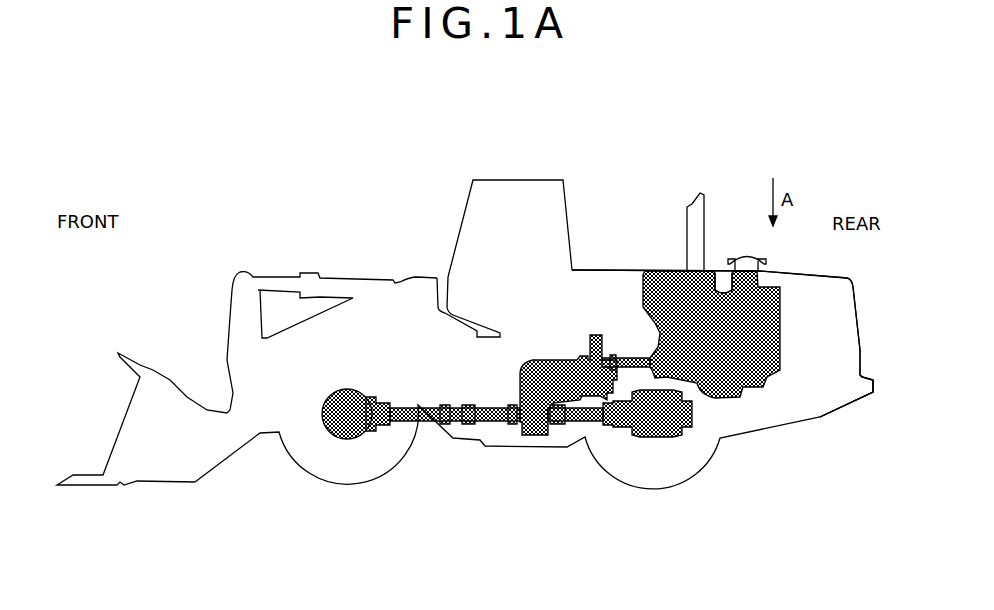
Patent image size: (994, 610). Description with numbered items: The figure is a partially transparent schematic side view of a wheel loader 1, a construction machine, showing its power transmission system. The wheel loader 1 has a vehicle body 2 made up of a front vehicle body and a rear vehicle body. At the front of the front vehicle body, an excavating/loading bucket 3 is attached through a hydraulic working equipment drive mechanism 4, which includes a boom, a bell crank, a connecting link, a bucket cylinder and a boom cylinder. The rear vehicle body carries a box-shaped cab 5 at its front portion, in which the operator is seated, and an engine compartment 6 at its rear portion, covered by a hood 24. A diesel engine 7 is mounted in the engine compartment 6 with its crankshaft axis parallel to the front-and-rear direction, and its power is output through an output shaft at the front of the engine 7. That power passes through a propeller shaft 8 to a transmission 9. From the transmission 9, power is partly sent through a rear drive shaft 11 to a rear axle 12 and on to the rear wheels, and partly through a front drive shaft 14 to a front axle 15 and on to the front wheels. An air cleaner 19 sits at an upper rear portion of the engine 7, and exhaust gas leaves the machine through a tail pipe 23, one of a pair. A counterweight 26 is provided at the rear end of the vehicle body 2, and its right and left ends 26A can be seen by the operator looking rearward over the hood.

The wheel loader 1 is at (427, 131).
The vehicle body 2 is at (613, 271).
The excavating/loading bucket 3 is at (160, 374).
The hydraulic working equipment drive mechanism 4 is at (257, 255).
The cab 5 is at (530, 182).
The engine compartment 6 is at (806, 286).
The engine 7 is at (780, 332).
The propeller shaft 8 is at (627, 356).
The transmission 9 is at (520, 374).
The rear drive shaft 11 is at (577, 440).
The rear axle 12 is at (652, 438).
The front drive shaft 14 is at (420, 410).
The front axle 15 is at (342, 440).
The air cleaner 19 is at (757, 280).
The tail pipe 23 is at (686, 224).
The hood 24 is at (720, 271).
The counterweight 26 is at (842, 416).
The right and left ends of counterweight 26A is at (876, 397).